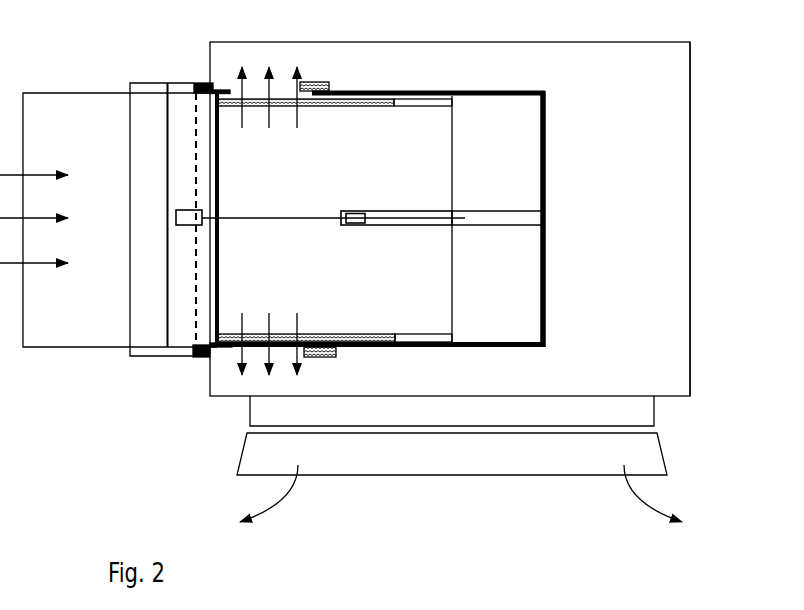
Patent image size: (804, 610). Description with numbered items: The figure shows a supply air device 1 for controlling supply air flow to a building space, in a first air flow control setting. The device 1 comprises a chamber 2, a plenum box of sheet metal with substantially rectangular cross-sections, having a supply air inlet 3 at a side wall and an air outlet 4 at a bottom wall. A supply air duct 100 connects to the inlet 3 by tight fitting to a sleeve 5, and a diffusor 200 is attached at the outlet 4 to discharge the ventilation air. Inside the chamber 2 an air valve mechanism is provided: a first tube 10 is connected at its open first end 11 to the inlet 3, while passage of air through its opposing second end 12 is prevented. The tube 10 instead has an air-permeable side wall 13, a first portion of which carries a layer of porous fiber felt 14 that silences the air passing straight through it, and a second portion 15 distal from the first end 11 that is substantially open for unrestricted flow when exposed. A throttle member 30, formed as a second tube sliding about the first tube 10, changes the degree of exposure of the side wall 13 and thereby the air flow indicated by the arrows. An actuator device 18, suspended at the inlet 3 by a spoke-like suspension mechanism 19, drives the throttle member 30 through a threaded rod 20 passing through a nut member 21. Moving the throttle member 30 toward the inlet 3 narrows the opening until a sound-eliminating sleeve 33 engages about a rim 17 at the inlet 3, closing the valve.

The supply air device 1 is at (723, 92).
The chamber 2 is at (670, 203).
The supply air inlet 3 is at (173, 336).
The air outlet 4 is at (512, 412).
The sleeve 5 is at (137, 82).
The first tube 10 is at (300, 197).
The first end 11 is at (210, 272).
The second end 12 is at (447, 278).
The side wall 13 is at (371, 110).
The porous material 14 is at (340, 333).
The open portion 15 is at (432, 108).
The rim 17 is at (223, 84).
The actuator device 18 is at (195, 212).
The suspension mechanism 19 is at (196, 295).
The threaded rod 20 is at (465, 218).
The nut member 21 is at (518, 219).
The throttle member 30 is at (547, 297).
The sound-eliminating sleeve 33 is at (315, 85).
The supply air duct 100 is at (82, 97).
The diffusor 200 is at (390, 463).